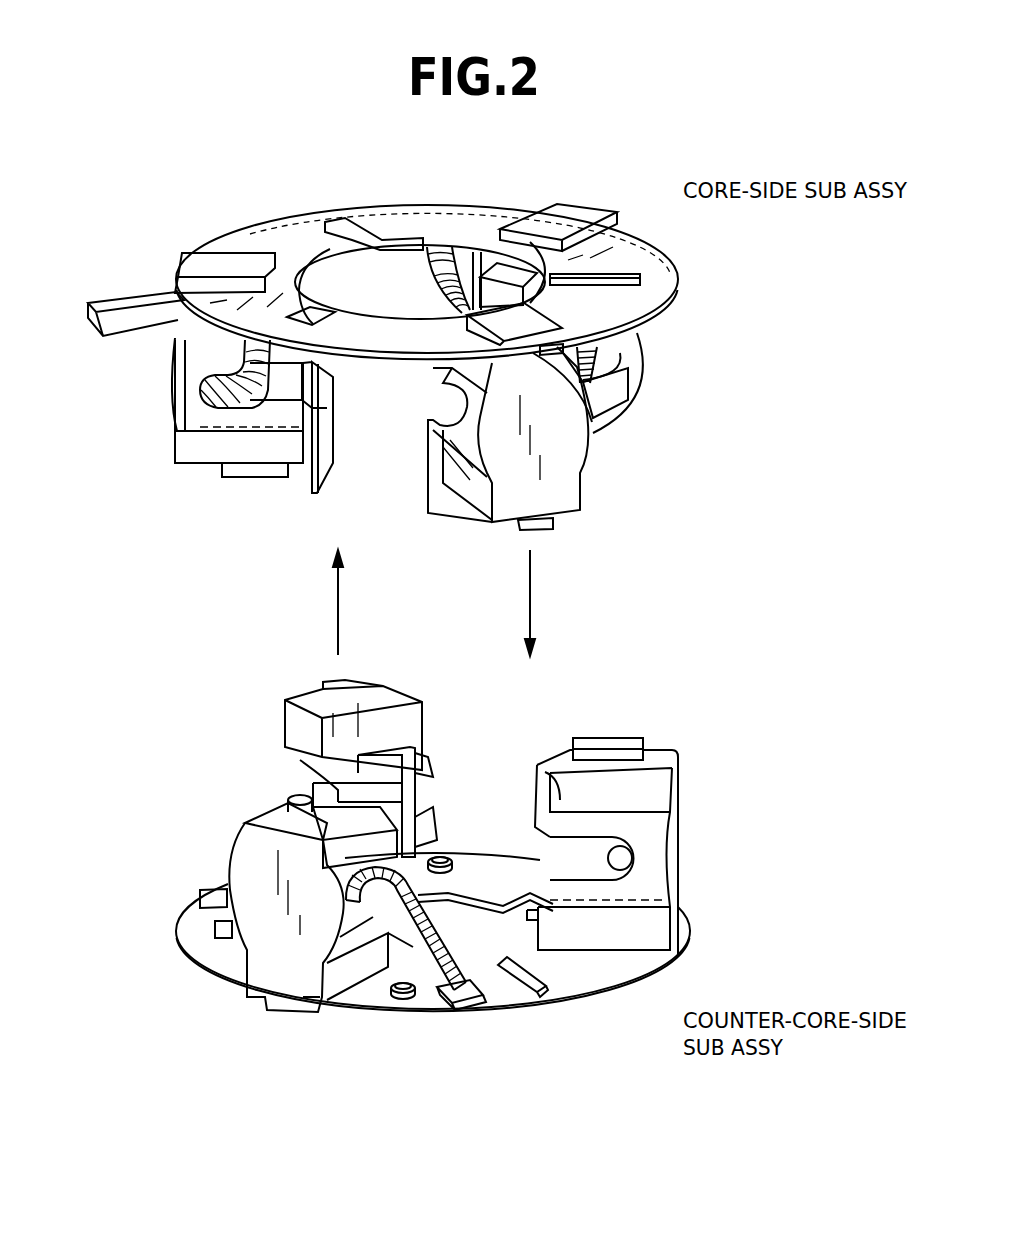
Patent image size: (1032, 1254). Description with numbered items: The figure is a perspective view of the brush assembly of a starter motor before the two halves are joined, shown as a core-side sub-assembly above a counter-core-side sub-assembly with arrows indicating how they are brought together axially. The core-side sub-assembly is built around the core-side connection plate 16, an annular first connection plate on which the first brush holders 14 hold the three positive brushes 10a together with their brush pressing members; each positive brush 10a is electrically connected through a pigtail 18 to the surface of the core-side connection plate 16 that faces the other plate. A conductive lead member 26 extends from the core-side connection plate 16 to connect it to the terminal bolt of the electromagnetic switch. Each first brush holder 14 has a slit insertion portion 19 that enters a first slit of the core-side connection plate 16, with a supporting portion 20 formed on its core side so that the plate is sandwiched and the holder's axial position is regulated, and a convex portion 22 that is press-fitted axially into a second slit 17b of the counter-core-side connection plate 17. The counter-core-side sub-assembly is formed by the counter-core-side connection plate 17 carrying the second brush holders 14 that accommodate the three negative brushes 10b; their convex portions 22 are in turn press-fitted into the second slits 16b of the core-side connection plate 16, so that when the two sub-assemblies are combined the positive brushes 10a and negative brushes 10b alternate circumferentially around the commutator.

The positive brush 10a is at (498, 285).
The negative brush 10b is at (398, 760).
The brush holder 14 is at (176, 426).
The core-side connection plate 16 is at (458, 208).
The second slit 16b is at (355, 226).
The counter-core-side connection plate 17 is at (557, 975).
The second slit 17b is at (503, 980).
The pigtail 18 is at (245, 405).
The slit insertion portion 19 is at (592, 422).
The supporting portion 20 is at (590, 378).
The convex portion 22 is at (543, 530).
The conductive lead member 26 is at (118, 308).